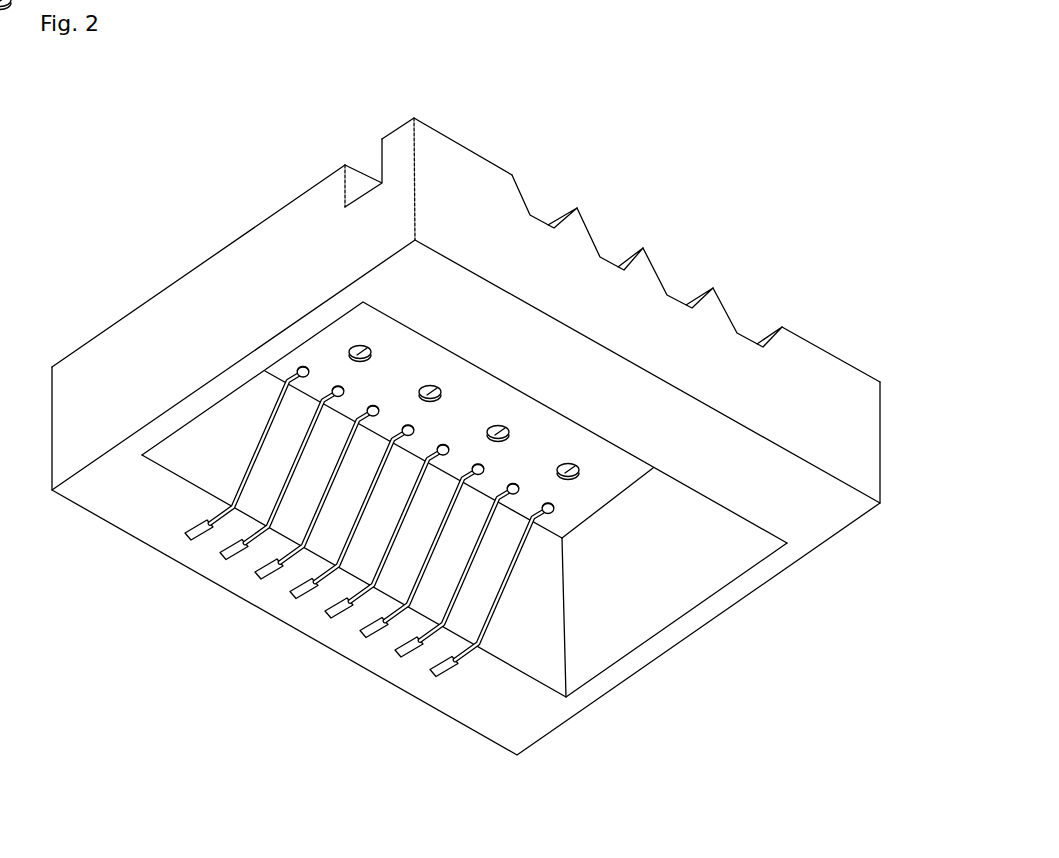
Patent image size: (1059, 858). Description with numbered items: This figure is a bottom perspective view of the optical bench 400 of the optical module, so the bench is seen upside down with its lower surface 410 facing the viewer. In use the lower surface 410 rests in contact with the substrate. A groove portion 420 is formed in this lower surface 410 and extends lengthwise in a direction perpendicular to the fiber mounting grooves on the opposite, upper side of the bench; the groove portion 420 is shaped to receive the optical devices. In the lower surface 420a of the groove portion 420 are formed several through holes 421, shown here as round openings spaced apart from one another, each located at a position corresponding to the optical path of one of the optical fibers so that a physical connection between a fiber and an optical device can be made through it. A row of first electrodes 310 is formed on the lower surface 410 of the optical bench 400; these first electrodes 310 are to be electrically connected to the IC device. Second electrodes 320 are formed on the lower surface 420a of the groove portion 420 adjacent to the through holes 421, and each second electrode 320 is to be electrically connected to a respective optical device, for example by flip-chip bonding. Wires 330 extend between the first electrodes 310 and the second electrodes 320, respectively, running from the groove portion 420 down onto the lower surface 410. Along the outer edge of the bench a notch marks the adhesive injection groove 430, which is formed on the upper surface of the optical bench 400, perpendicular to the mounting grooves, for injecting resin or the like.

The optical bench 400 is at (88, 70).
The lower surface 410 is at (550, 363).
The groove portion 420 is at (607, 581).
The lower surface of the groove portion 420a is at (603, 473).
The through holes 421 is at (432, 384).
The adhesive injection groove 430 is at (358, 197).
The first electrodes 310 is at (233, 553).
The second electrodes 320 is at (301, 366).
The wires 330 is at (257, 443).